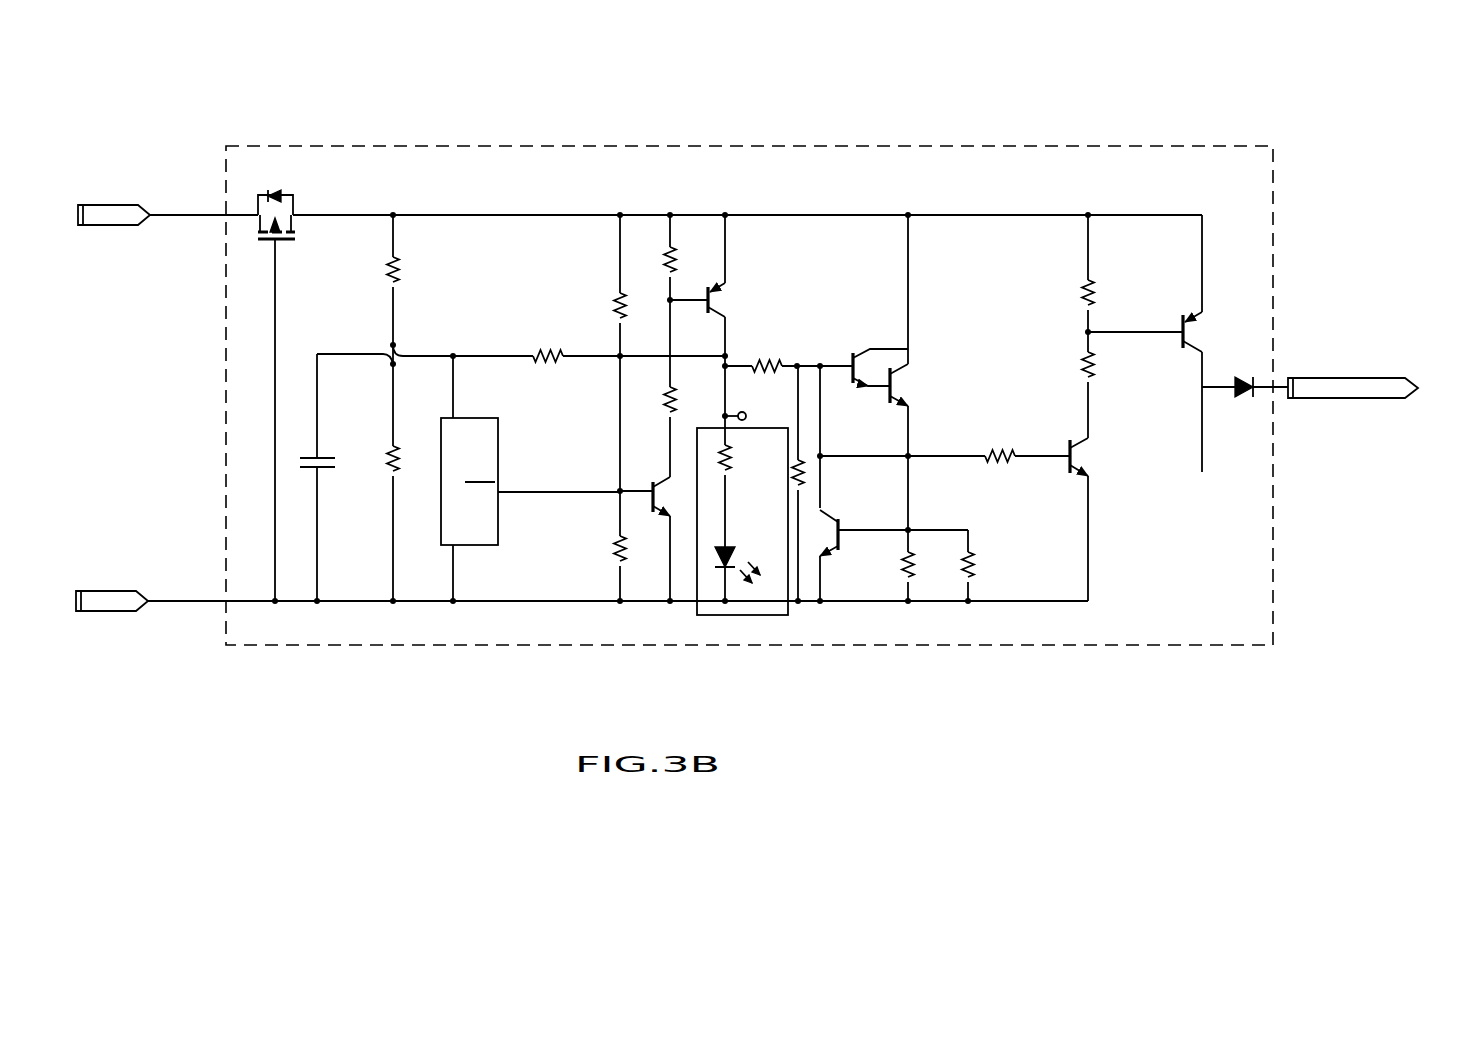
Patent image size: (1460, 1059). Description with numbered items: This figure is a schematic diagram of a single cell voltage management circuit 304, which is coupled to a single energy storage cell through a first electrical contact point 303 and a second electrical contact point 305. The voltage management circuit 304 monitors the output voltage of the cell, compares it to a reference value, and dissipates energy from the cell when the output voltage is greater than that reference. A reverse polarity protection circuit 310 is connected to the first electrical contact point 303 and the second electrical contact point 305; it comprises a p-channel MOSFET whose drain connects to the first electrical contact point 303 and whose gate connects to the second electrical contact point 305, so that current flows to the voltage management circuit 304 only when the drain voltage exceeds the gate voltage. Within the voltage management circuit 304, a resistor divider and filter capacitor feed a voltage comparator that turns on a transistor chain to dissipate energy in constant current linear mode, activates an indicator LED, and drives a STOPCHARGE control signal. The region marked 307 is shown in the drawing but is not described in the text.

The first electrical contact point 303 is at (108, 224).
The single cell voltage management circuit 304 is at (176, 129).
The second electrical contact point 305 is at (100, 614).
The circuit boundary 307 is at (1229, 648).
The reverse polarity protection circuit 310 is at (284, 158).